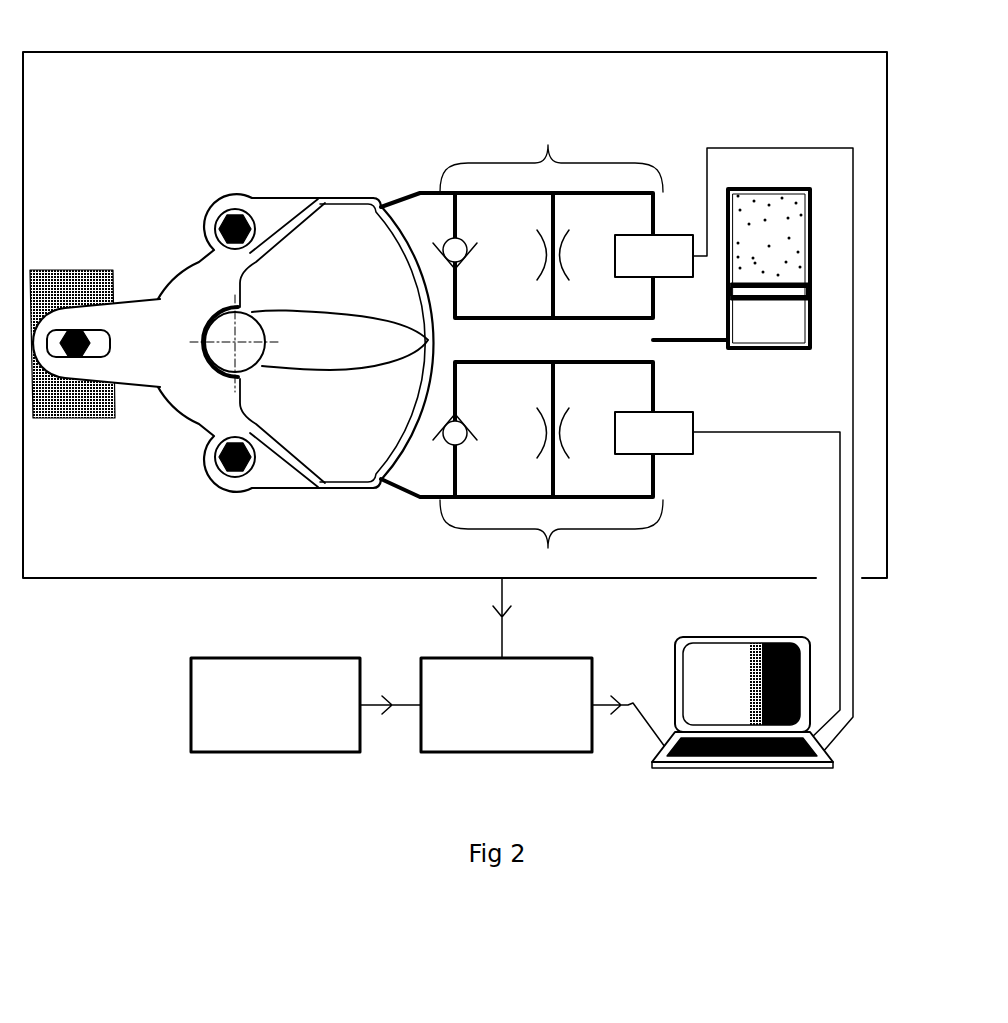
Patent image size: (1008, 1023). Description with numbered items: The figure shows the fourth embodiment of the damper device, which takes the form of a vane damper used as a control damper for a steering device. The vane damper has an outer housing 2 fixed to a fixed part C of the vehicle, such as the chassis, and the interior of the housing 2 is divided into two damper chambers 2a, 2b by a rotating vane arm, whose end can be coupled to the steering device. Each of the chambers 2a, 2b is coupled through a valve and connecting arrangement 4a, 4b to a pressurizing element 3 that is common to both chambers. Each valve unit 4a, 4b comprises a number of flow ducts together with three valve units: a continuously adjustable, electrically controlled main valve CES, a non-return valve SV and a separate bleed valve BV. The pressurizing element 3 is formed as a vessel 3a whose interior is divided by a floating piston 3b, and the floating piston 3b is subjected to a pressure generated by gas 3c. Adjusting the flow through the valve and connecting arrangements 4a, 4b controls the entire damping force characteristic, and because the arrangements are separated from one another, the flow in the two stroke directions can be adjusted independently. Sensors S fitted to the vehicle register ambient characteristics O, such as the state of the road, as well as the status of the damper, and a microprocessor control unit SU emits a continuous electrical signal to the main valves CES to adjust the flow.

The outer housing 2 is at (208, 223).
The damper chamber 2a is at (325, 237).
The damper chamber 2b is at (327, 437).
The fixed part C is at (68, 277).
The valve and connecting arrangement 4a is at (522, 217).
The valve and connecting arrangement 4b is at (554, 460).
The non-return valve SV is at (470, 341).
The bleed valve BV is at (563, 344).
The main valve CES is at (734, 450).
The pressurizing element 3 is at (767, 357).
The vessel 3a is at (812, 327).
The floating piston 3b is at (805, 290).
The gas 3c is at (783, 230).
The ambient characteristics O is at (306, 705).
The sensors S is at (543, 665).
The microprocessor control unit SU is at (742, 721).